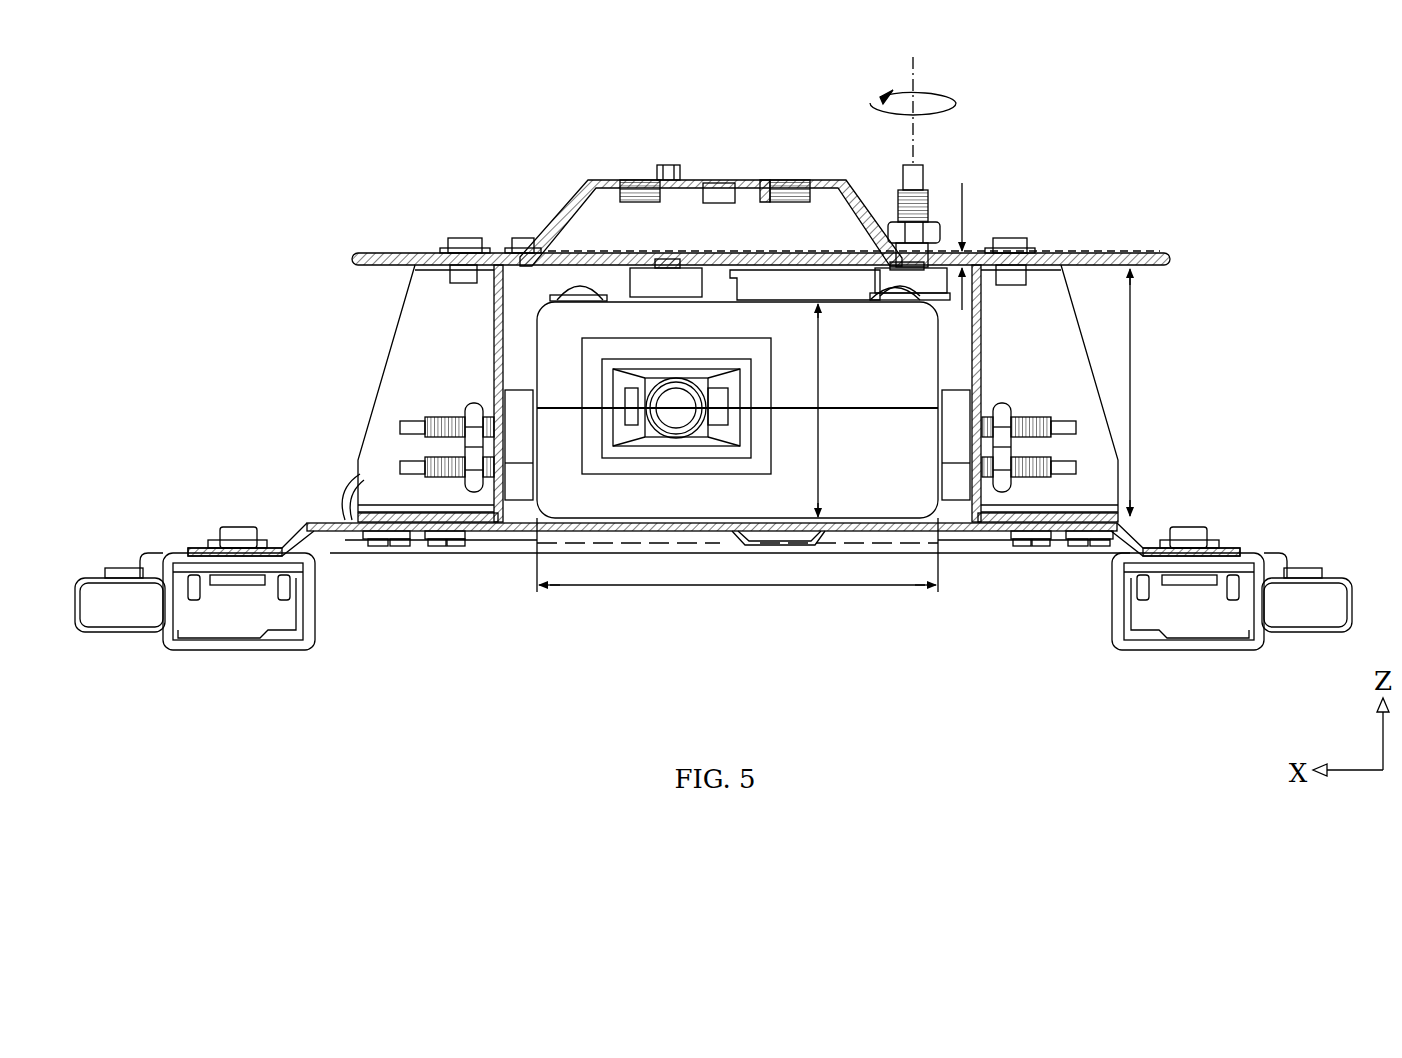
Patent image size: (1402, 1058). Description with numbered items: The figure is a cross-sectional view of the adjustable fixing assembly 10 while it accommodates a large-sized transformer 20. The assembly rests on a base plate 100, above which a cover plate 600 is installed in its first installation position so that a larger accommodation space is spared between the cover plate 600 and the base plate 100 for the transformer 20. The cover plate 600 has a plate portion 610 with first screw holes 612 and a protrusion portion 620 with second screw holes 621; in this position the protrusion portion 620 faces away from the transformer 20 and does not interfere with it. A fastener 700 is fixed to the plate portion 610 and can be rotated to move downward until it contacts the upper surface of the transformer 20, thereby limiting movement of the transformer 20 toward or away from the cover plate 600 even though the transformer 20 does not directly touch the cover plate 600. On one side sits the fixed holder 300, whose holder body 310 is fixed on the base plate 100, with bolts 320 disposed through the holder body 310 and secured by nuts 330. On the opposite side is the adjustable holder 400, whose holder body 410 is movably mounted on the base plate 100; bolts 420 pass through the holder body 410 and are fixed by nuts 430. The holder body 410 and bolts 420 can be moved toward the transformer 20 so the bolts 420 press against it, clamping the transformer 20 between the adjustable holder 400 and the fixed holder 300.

The adjustable fixing assembly 10 is at (308, 216).
The transformer 20 is at (690, 322).
The base plate 100 is at (342, 530).
The fixed holder 300 is at (1087, 298).
The holder body 310 is at (1042, 530).
The bolts 320 is at (958, 502).
The nuts 330 is at (1000, 492).
The adjustable holder 400 is at (413, 318).
The holder body 410 is at (434, 530).
The bolts 420 is at (515, 394).
The nuts 430 is at (470, 412).
The cover plate 600 is at (625, 118).
The plate portion 610 is at (497, 257).
The first screw holes 612 is at (926, 195).
The protrusion portion 620 is at (603, 181).
The second screw holes 621 is at (790, 176).
The fasteners 700 is at (885, 300).